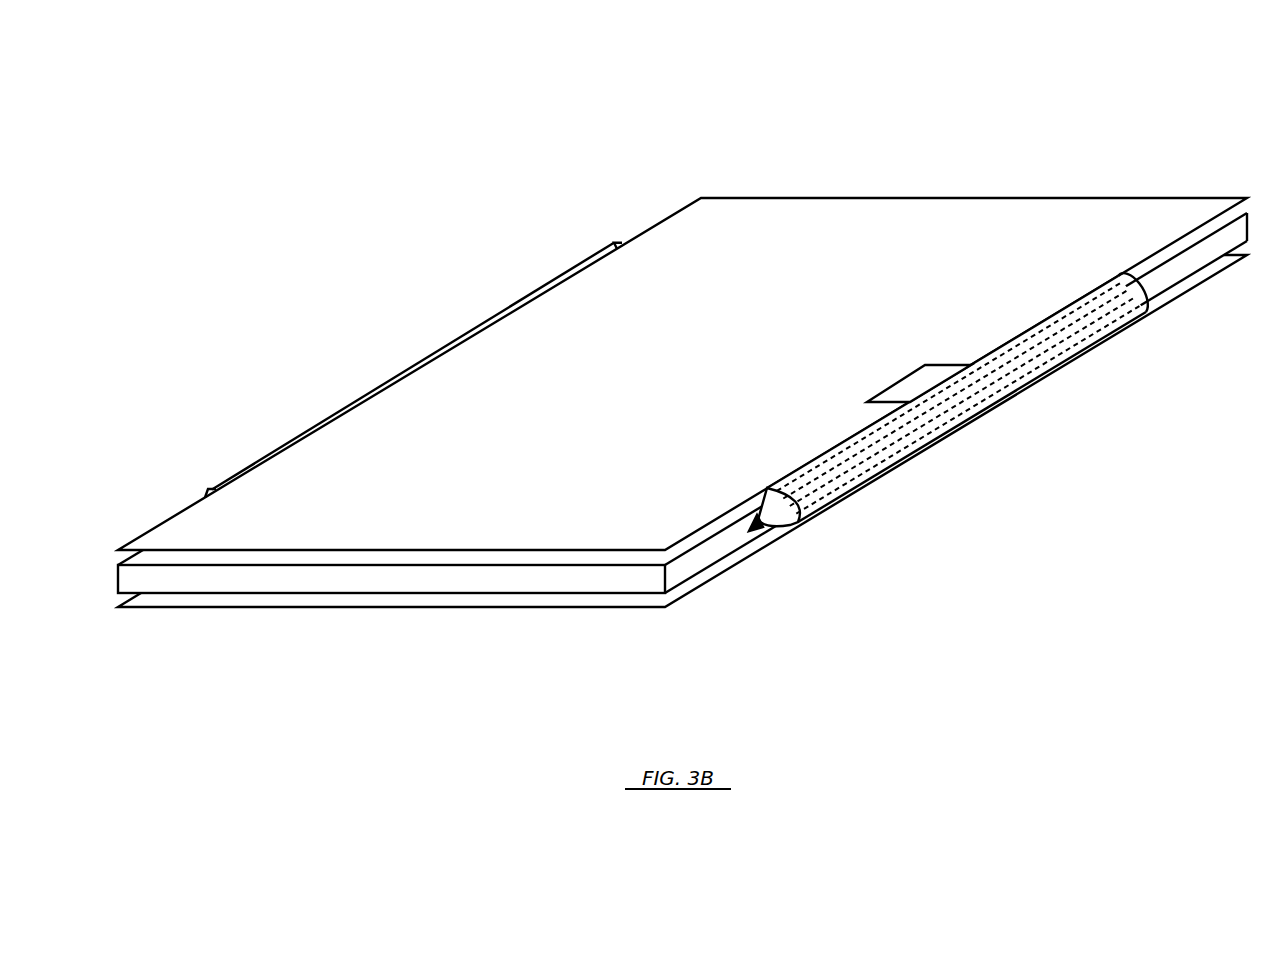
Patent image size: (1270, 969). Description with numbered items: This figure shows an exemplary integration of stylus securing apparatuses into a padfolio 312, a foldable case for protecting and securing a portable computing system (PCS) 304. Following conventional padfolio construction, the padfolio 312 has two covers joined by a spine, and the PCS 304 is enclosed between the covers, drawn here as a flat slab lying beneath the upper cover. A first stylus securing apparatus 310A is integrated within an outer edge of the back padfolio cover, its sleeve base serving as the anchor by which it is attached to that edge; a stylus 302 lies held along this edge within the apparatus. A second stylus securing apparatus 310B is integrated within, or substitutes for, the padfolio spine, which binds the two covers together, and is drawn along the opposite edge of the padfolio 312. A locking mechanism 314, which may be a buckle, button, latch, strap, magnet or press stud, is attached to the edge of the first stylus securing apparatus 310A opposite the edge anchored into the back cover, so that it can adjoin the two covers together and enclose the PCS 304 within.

The padfolio 312 is at (858, 212).
The portable computing system (PCS) 304 is at (403, 590).
The second stylus securing apparatus (padfolio spine) 310B is at (415, 348).
The first stylus securing apparatus 310A is at (981, 436).
The stylus 302 is at (783, 538).
The locking mechanism 314 is at (888, 377).